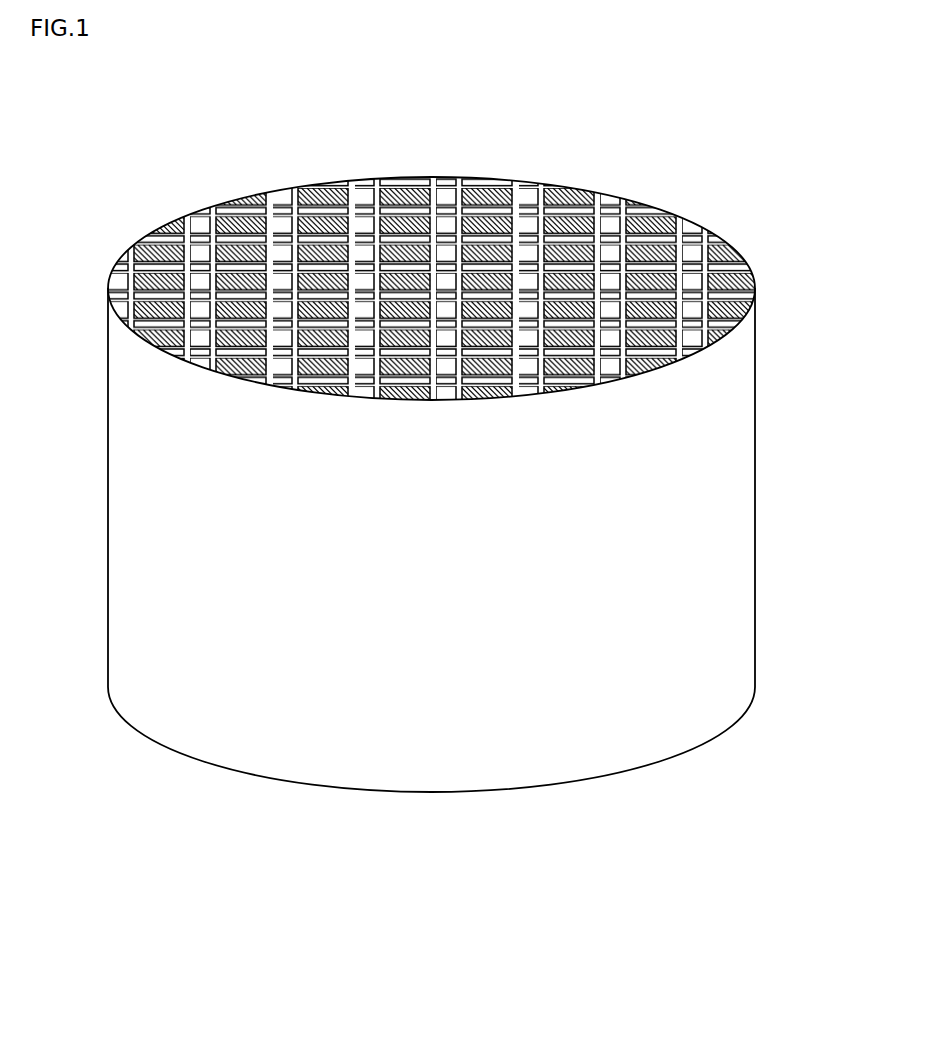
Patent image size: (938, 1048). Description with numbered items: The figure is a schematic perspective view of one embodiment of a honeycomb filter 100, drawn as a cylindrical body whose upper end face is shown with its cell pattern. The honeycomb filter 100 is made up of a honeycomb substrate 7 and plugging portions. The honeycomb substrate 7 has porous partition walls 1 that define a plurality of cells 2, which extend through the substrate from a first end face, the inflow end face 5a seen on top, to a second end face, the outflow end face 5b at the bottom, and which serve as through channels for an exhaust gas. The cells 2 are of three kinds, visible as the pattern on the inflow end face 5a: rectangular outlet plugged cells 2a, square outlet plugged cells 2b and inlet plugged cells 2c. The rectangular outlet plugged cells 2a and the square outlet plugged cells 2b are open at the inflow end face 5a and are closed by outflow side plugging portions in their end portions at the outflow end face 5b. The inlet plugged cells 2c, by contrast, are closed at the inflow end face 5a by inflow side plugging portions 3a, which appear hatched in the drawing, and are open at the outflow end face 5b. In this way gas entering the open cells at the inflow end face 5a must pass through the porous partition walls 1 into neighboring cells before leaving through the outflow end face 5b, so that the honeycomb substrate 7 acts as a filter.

The honeycomb filter 100 is at (750, 92).
The porous partition walls 1 is at (135, 258).
The cells 2 is at (431, 288).
The rectangular outlet plugged cells 2a is at (693, 252).
The square outlet plugged cells 2b is at (700, 267).
The inlet plugged cells 2c is at (668, 282).
The inflow side plugging portions 3a is at (672, 335).
The inflow end face 5a is at (207, 199).
The outflow end face 5b is at (471, 803).
The honeycomb substrate 7 is at (127, 593).